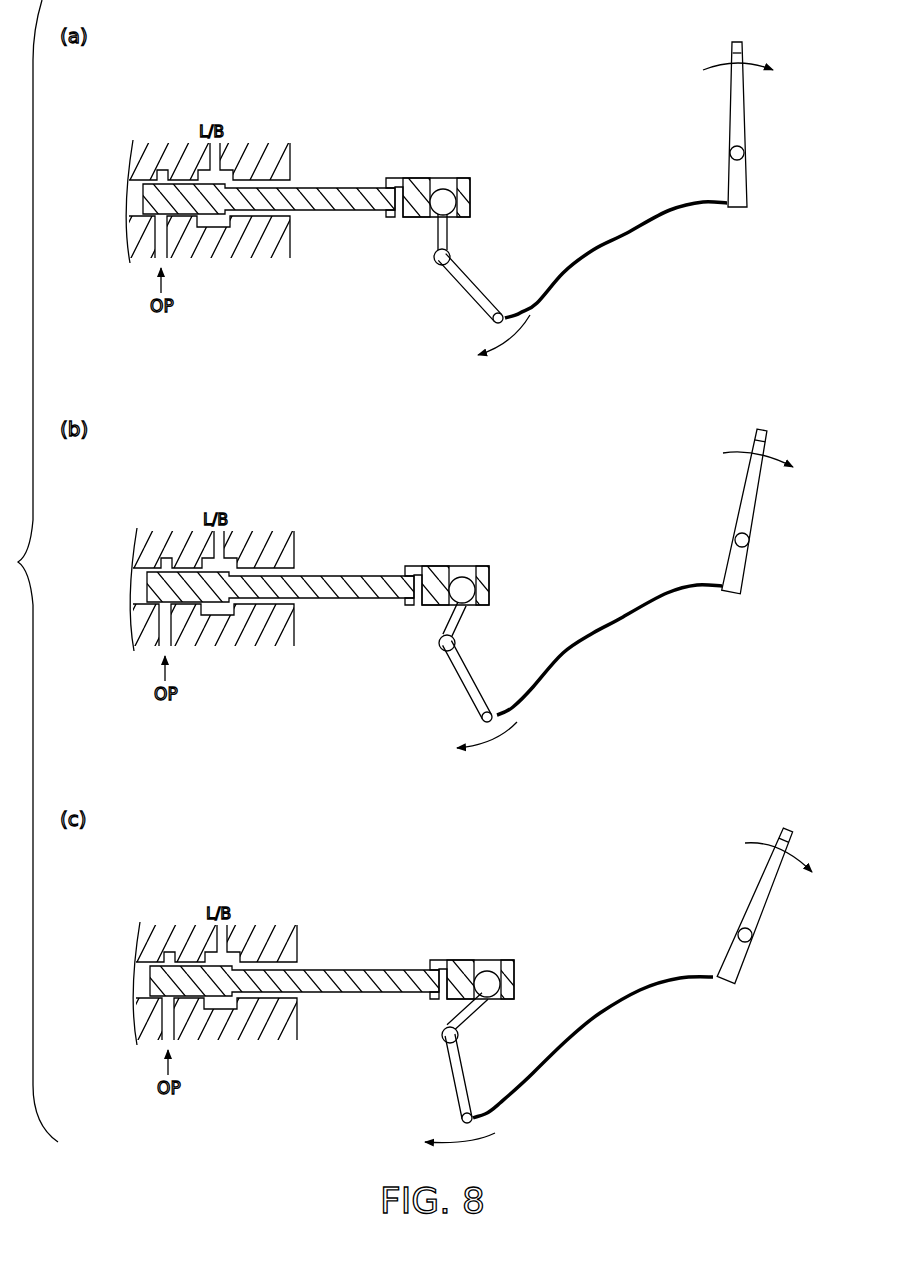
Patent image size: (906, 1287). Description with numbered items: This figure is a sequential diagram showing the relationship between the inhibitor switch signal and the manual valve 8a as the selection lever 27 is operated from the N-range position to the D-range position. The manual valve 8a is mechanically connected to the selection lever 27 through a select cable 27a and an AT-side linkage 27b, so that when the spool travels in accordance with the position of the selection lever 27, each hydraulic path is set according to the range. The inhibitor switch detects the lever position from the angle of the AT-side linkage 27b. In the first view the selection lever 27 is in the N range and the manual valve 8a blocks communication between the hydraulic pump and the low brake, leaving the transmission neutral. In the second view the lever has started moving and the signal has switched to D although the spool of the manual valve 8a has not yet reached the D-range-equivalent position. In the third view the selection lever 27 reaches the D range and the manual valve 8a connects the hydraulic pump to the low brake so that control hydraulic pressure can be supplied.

The manual valve 8a is at (409, 169).
The selection lever 27 is at (730, 113).
The select cable 27a is at (595, 248).
The AT-side linkage 27b is at (470, 293).